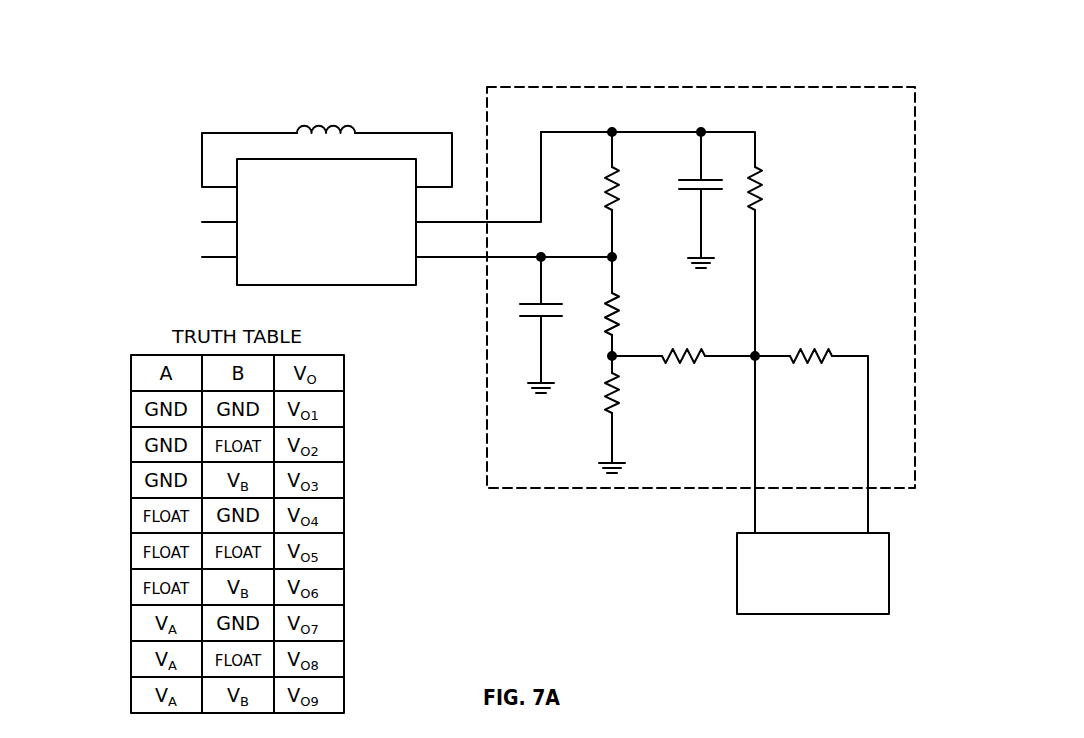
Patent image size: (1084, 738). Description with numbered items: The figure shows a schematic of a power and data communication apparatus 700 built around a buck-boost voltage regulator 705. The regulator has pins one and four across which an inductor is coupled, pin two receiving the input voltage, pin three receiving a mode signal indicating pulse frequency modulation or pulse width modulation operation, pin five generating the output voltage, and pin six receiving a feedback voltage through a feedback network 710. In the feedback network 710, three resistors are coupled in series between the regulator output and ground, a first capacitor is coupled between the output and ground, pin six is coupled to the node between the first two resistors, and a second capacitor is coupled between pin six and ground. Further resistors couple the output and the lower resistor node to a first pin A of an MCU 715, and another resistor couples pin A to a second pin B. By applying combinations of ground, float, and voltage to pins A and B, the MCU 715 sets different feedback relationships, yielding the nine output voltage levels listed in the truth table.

The power and data communication apparatus 700 is at (738, 63).
The buck-boost voltage regulator 705 is at (349, 192).
The feedback network 710 is at (701, 310).
The MCU 715 is at (813, 562).